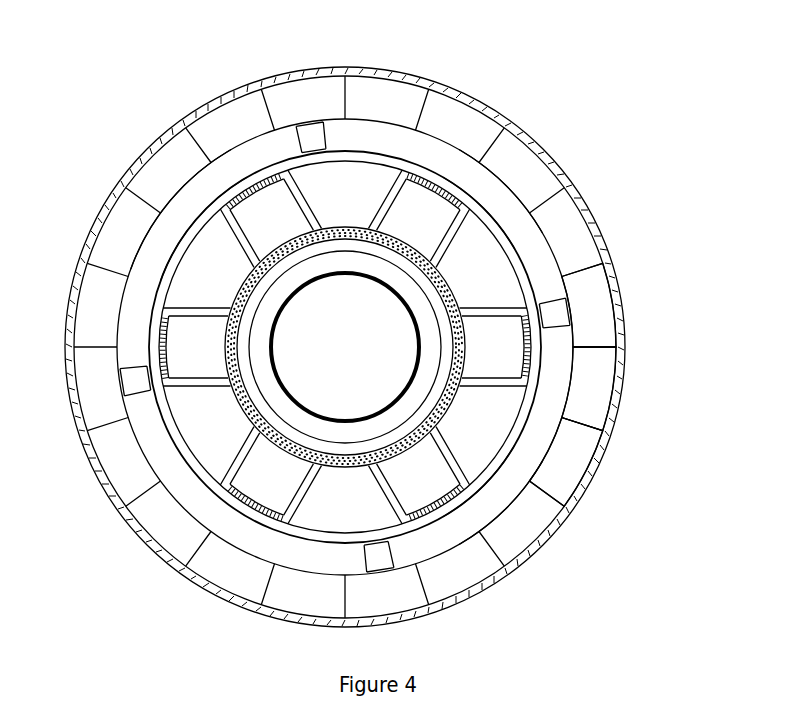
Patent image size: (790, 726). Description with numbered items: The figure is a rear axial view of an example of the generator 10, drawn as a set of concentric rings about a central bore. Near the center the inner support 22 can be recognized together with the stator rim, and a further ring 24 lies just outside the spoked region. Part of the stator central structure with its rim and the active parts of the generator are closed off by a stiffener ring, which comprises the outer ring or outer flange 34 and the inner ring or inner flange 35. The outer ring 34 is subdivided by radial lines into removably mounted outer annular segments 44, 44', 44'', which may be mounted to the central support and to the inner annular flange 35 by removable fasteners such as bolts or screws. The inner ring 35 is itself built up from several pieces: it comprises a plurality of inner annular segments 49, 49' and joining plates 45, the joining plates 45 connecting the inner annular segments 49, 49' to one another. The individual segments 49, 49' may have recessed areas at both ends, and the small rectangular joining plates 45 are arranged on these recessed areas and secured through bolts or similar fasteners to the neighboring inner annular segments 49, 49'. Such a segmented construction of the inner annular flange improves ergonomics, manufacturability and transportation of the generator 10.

The generator 10 is at (617, 128).
The inner support 22 is at (425, 170).
The intermediate ring 24 is at (385, 145).
The outer ring 34 is at (573, 227).
The inner ring 35 is at (177, 210).
The removably mounted outer annular segment 44 is at (628, 305).
The removably mounted outer annular segment 44' is at (631, 389).
The pad 44'' is at (601, 467).
The joining plate 45 is at (310, 136).
The inner annular segment 49 is at (516, 531).
The inner annular segment 49' is at (510, 173).